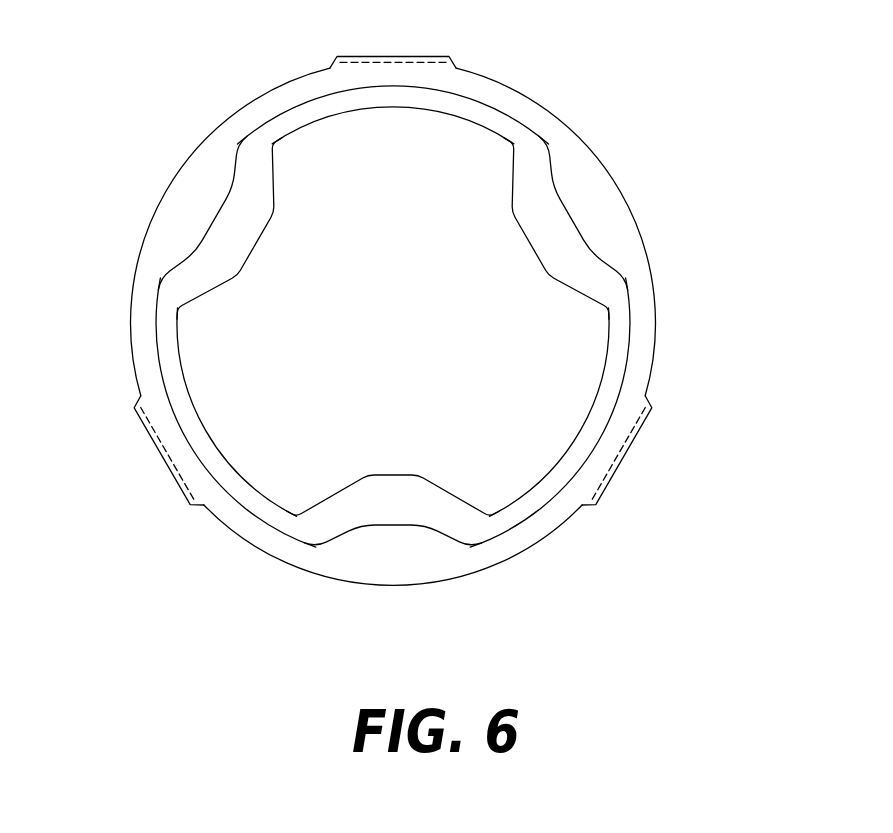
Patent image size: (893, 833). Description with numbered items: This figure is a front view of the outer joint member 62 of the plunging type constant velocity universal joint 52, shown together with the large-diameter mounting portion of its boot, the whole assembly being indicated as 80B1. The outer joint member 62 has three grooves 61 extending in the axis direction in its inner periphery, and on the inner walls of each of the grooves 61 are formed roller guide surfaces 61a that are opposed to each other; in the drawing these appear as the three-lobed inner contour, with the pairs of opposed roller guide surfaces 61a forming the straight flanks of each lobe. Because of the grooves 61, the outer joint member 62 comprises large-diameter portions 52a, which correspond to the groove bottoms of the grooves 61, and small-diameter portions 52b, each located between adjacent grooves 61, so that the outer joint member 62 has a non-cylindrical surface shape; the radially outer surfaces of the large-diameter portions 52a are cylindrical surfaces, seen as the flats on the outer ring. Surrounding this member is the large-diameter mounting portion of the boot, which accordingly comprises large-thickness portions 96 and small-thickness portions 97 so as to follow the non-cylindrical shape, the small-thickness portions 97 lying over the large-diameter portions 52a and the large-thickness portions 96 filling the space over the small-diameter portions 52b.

The bearing unit 80B1 is at (427, 323).
The outer joint member 62 is at (364, 344).
The plunging type constant velocity universal joint 52 is at (401, 323).
The large-diameter portion 52a is at (390, 92).
The small-diameter portion 52b is at (560, 230).
The groove 61 is at (393, 302).
The roller guide surface 61a is at (513, 185).
The large-thickness portion 96 is at (423, 558).
The small-thickness portion 97 is at (143, 418).